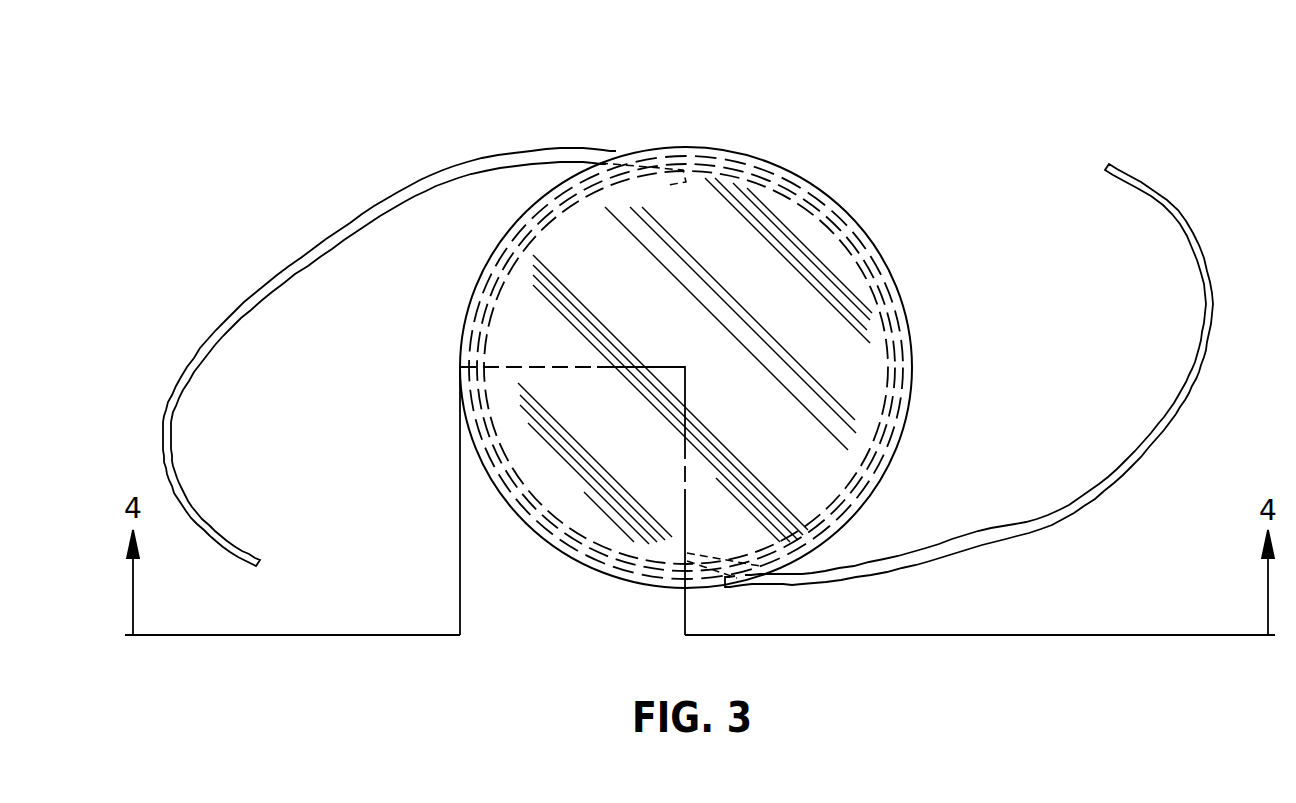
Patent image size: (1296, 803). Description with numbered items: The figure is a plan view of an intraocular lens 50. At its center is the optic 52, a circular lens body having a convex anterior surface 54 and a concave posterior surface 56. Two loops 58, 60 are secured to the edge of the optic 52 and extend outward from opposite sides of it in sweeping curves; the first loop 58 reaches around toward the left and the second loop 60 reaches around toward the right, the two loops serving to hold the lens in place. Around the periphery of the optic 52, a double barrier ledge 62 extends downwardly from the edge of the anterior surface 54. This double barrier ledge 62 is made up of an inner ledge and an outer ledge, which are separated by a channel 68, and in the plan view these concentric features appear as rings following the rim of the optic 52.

The intraocular lens 50 is at (1062, 66).
The optic 52 is at (840, 205).
The convex anterior surface 54 is at (842, 257).
The concave posterior surface 56 is at (867, 295).
The loop 58 is at (165, 428).
The loop 60 is at (1211, 298).
The double barrier ledge 62 is at (893, 323).
The channel 68 is at (895, 369).